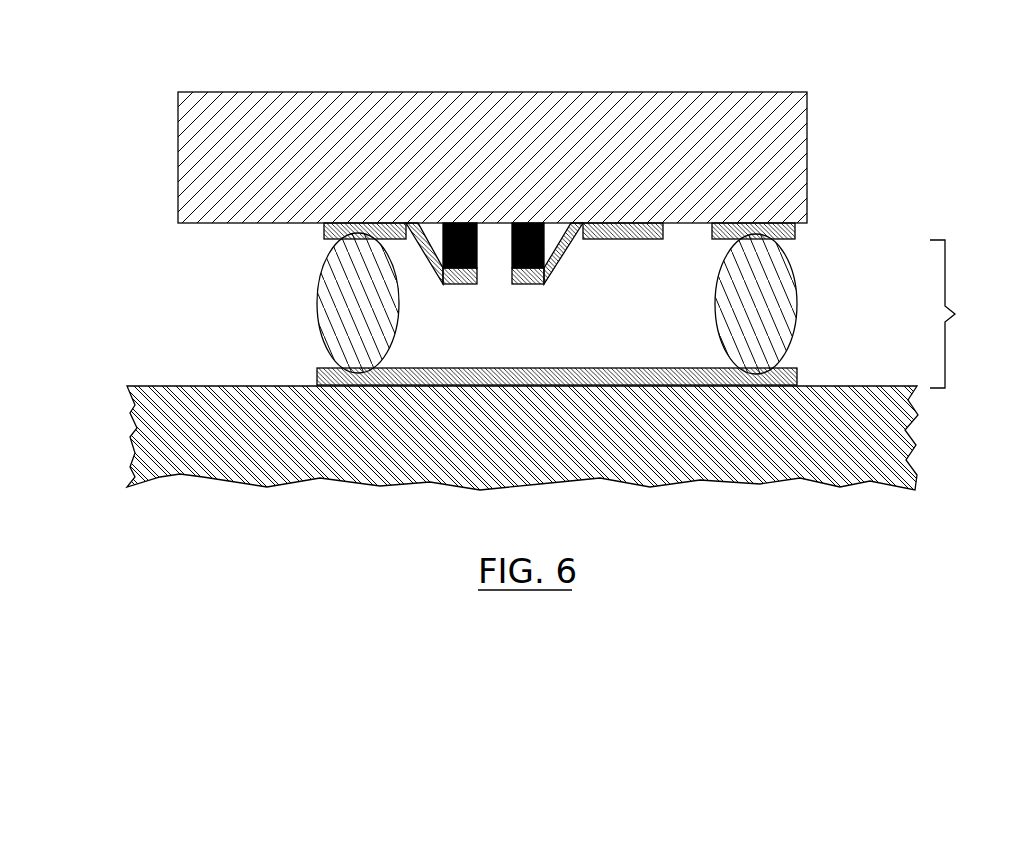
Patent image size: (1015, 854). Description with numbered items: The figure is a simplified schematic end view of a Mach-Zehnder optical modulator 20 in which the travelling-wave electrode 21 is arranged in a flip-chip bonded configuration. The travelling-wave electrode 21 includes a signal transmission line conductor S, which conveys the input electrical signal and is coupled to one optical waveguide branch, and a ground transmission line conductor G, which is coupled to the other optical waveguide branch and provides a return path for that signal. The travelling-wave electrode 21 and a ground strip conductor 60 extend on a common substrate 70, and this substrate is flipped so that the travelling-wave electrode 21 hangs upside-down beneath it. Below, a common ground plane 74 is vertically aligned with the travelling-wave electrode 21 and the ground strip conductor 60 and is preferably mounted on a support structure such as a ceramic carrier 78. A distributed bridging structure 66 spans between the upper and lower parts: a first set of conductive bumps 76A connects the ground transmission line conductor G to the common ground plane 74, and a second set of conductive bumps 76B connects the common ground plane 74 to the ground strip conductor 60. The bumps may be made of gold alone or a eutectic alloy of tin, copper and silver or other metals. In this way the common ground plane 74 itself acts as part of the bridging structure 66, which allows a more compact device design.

The semiconductor package 20 is at (912, 115).
The travelling-wave electrode 21 is at (232, 240).
The ground strip conductor 60 is at (795, 233).
The distributed bridging structure 66 is at (960, 314).
The common substrate 70 is at (795, 152).
The common ground plane 74 is at (797, 378).
The first set of conductive bumps 76A is at (322, 319).
The second set of conductive bumps 76B is at (797, 308).
The ceramic carrier 78 is at (145, 432).
The ground transmission line conductor G is at (324, 230).
The signal transmission line conductor S is at (620, 239).